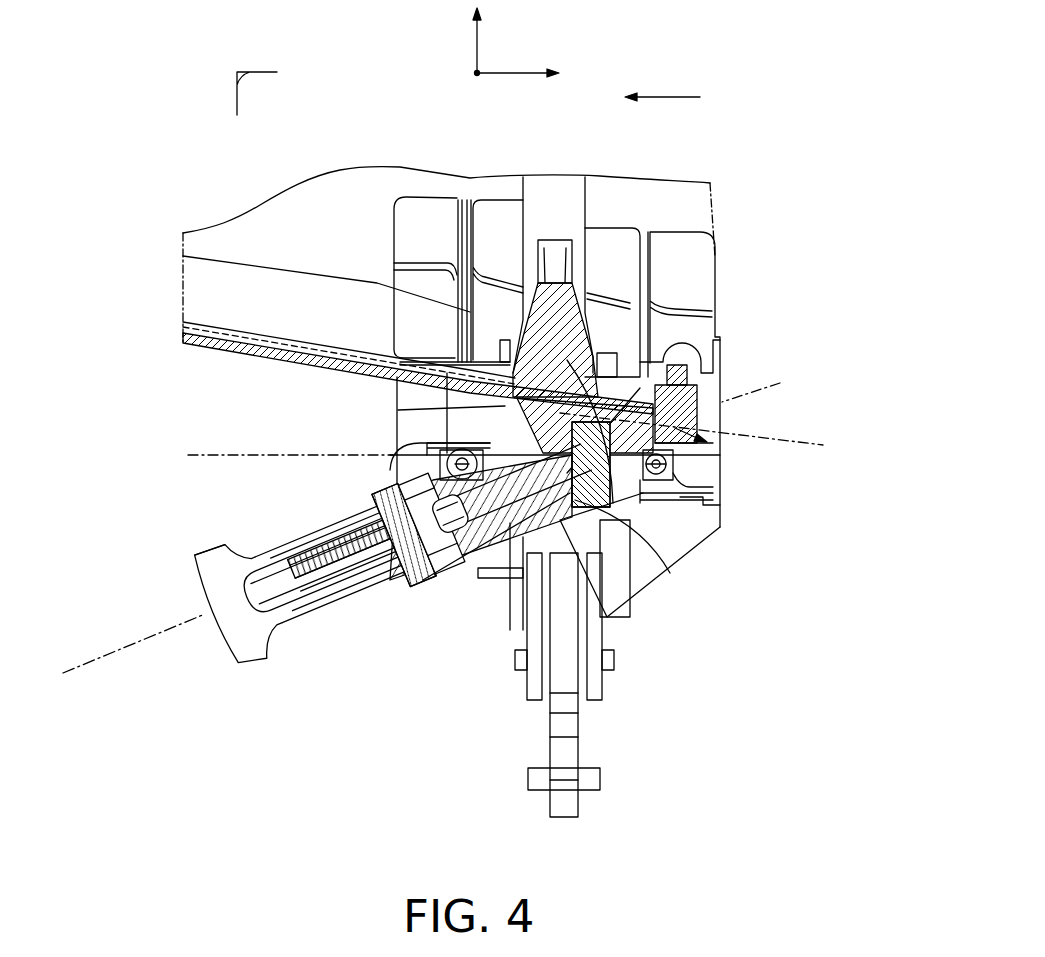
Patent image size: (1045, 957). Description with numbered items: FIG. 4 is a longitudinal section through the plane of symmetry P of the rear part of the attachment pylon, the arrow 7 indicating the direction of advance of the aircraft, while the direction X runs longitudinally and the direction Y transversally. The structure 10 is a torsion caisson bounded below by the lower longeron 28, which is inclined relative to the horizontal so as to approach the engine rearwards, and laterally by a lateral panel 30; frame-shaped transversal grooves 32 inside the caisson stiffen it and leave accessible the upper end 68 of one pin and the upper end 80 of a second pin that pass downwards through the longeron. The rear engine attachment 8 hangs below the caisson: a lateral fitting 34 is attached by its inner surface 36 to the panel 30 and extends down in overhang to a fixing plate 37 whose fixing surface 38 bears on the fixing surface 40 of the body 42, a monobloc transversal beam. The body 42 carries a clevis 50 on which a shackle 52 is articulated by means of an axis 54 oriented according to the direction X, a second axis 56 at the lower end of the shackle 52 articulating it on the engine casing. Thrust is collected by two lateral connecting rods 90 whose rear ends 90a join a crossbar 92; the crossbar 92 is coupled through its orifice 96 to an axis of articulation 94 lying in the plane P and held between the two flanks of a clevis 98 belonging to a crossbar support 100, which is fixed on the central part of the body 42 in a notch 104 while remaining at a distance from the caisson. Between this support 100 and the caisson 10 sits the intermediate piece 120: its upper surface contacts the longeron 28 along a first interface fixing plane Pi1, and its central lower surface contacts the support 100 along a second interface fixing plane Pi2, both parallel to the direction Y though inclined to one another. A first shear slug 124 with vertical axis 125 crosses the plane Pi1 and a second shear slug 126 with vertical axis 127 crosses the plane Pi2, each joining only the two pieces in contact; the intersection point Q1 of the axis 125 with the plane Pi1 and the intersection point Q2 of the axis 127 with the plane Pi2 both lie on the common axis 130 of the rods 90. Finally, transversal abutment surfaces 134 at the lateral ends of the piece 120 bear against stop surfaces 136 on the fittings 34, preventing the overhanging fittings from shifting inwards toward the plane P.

The arrow 7 is at (672, 97).
The rear engine attachment 8 is at (668, 610).
The structure 10 is at (282, 256).
The lower longeron 28 is at (200, 340).
The lateral panel 30 is at (390, 165).
The transversal grooves 32 is at (517, 228).
The lateral fitting 34 is at (385, 410).
The inner surface 36 is at (400, 458).
The fixing plate 37 is at (715, 440).
The fixing surface 38 is at (688, 505).
The fixing surface 40 is at (695, 497).
The body 42 is at (680, 560).
The clevis 50 is at (598, 683).
The shackle 52 is at (578, 742).
The plate 54 is at (518, 662).
The second axis 56 is at (602, 780).
The upper end 68 is at (510, 350).
The upper end 80 is at (603, 353).
The lateral thrust force collection connecting rods 90 is at (243, 680).
The rear end 90a is at (245, 540).
The crossbar 92 is at (280, 595).
The axis of articulation 94 is at (412, 567).
The orifice 96 is at (440, 515).
The clevis 98 is at (375, 563).
The crossbar support 100 is at (473, 531).
The notch 104 is at (563, 497).
The intermediate piece 120 is at (515, 398).
The first shear slug 124 is at (712, 432).
The vertical axis 125 is at (680, 538).
The second shear slug 126 is at (420, 485).
The vertical axis 127 is at (690, 570).
The common axis 130 is at (92, 668).
The transversal abutment surfaces 134 is at (470, 452).
The stop surfaces 136 is at (720, 458).
The plane of symmetry P is at (250, 78).
The direction X is at (525, 61).
The direction Y is at (468, 49).
The intersection point Q1 is at (715, 428).
The intersection point Q2 is at (590, 395).
The first interface fixing plane Pi1 is at (769, 390).
The second interface fixing plane Pi2 is at (195, 454).